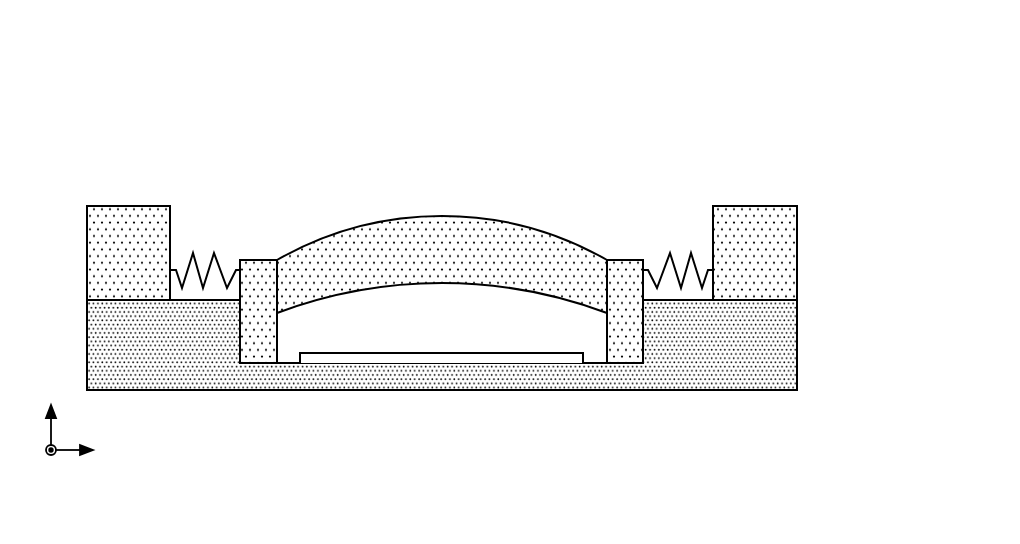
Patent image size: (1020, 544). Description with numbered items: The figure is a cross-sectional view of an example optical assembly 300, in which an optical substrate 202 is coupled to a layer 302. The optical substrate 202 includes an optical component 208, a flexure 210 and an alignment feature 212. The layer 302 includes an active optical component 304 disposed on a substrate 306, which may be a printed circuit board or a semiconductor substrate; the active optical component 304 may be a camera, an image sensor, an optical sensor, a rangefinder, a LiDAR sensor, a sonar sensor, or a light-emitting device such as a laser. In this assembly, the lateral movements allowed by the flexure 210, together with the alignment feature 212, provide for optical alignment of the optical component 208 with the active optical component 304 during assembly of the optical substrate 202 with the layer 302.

The optical assembly 300 is at (822, 86).
The optical substrate 202 is at (488, 257).
The optical component 208 is at (447, 240).
The flexure 210 is at (192, 254).
The alignment feature 212 is at (262, 280).
The layer 302 is at (488, 377).
The active optical component 304 is at (413, 360).
The substrate 306 is at (687, 380).